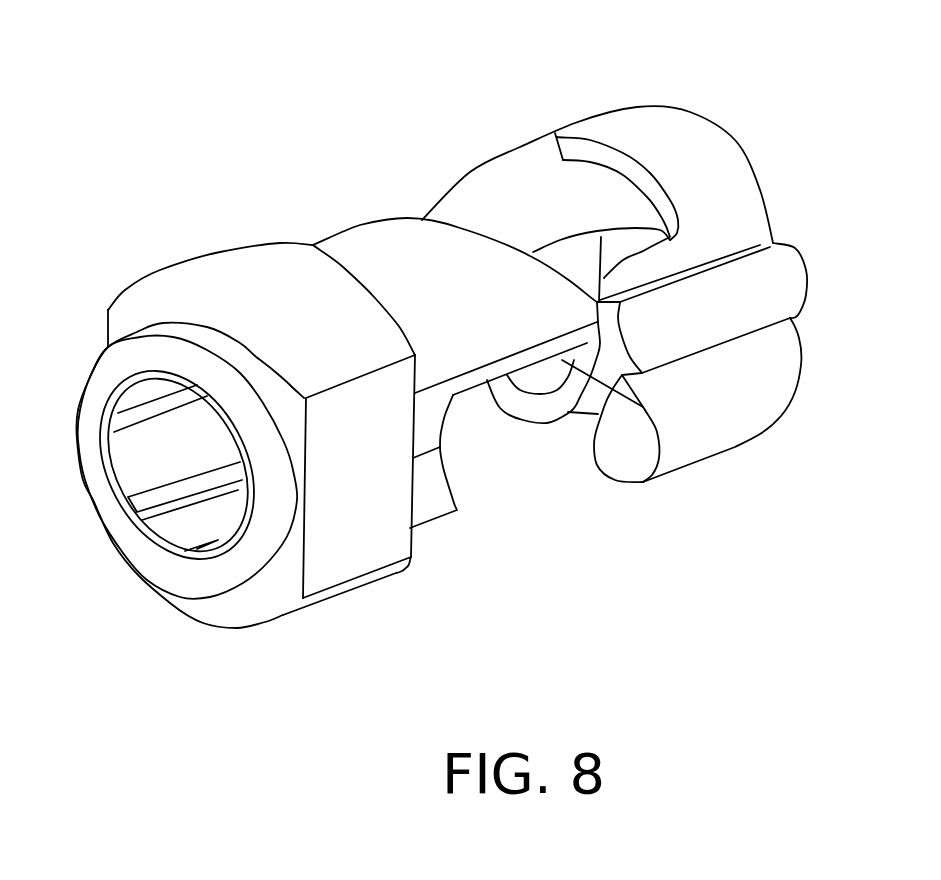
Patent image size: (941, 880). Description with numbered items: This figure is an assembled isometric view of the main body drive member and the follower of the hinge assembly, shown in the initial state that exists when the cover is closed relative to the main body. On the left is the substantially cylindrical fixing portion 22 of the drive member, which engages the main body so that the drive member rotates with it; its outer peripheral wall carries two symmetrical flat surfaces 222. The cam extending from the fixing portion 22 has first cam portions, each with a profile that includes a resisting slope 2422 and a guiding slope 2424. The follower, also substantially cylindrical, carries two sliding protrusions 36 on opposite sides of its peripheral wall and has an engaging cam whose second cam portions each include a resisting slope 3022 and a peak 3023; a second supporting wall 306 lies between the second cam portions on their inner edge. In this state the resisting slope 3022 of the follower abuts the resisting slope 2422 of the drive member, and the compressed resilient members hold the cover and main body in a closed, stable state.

The fixing portion 22 is at (247, 265).
The flat surfaces 222 is at (363, 540).
The guiding slope 2424 is at (483, 230).
The resisting slope 3022 is at (601, 237).
The sliding protrusions 36 is at (780, 280).
The resisting slope 2422 is at (620, 330).
The peak 3023 is at (603, 343).
The second supporting wall 306 is at (532, 400).